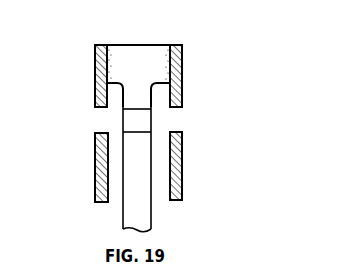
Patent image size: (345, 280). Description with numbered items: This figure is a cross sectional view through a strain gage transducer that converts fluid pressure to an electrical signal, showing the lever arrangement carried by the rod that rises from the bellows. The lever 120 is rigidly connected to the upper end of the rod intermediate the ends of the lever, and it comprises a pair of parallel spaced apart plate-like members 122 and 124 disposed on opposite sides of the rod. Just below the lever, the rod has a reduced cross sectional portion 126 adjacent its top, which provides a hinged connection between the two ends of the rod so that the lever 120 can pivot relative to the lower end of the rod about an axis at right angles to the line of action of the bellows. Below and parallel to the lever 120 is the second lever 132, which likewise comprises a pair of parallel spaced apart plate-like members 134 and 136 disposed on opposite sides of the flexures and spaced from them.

The lever 120 is at (144, 69).
The plate-like member 122 is at (185, 101).
The plate-like member 124 is at (96, 103).
The reduced cross sectional portion 126 is at (158, 120).
The second lever 132 is at (133, 167).
The plate-like member 134 is at (182, 173).
The plate-like member 136 is at (95, 176).